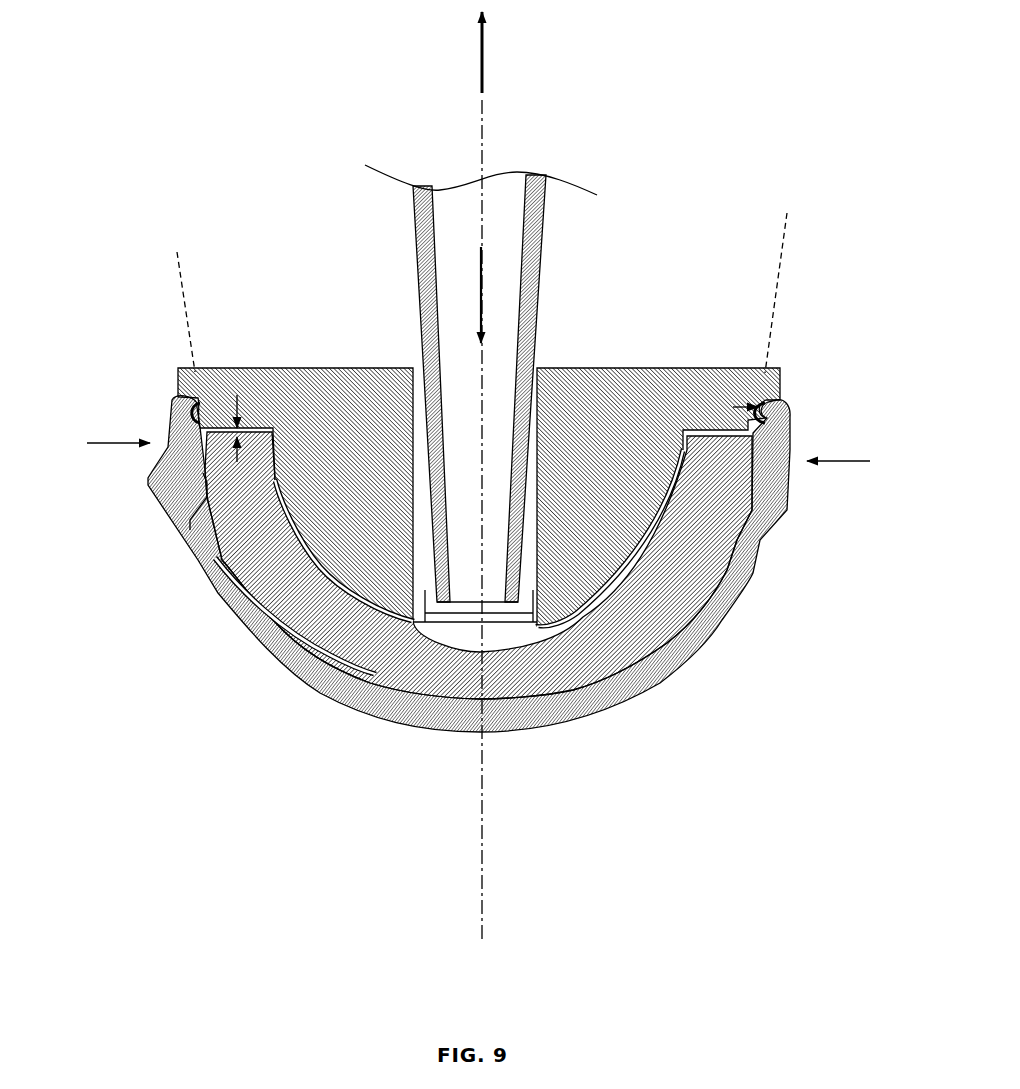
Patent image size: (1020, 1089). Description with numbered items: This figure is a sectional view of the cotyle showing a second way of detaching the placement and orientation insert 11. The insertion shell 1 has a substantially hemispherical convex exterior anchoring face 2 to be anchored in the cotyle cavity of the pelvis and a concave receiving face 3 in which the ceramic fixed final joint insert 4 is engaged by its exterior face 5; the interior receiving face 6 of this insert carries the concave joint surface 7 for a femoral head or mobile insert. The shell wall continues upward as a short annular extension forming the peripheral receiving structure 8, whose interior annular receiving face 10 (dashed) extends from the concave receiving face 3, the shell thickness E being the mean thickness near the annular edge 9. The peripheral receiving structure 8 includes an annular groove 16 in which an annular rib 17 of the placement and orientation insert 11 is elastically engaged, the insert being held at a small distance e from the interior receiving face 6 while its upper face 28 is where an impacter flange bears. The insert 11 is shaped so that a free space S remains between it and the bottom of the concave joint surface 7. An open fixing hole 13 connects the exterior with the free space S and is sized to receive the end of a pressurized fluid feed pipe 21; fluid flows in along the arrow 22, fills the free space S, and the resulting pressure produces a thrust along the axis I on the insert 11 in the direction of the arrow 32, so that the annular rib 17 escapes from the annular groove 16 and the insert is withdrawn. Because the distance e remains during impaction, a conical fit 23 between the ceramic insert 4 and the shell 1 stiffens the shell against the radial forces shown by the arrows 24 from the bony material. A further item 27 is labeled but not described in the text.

The insertion shell 1 is at (677, 640).
The exterior anchoring face 2 is at (323, 695).
The concave receiving face 3 is at (268, 612).
The ceramic fixed final joint insert 4 is at (598, 656).
The exterior face 5 is at (220, 593).
The interior receiving face 6 is at (258, 430).
The concave joint surface 7 is at (385, 628).
The peripheral receiving structure 8 is at (158, 406).
The annular edge 9 is at (172, 401).
The interior annular receiving face 10 is at (175, 289).
The placement and orientation insert 11 is at (726, 388).
The fixing hole 13 is at (433, 582).
The annular groove 16 is at (767, 417).
The annular rib 17 is at (200, 405).
The pressurized fluid feed pipe 21 is at (538, 255).
The arrow 22 is at (481, 293).
The conical fit 23 is at (740, 510).
The arrows 24 is at (118, 443).
The step 27 is at (150, 482).
The upper face 28 is at (613, 368).
The arrow 32 is at (482, 57).
The distance e is at (183, 537).
The thickness E is at (793, 407).
The free space S is at (493, 635).
The axis I- I is at (494, 520).